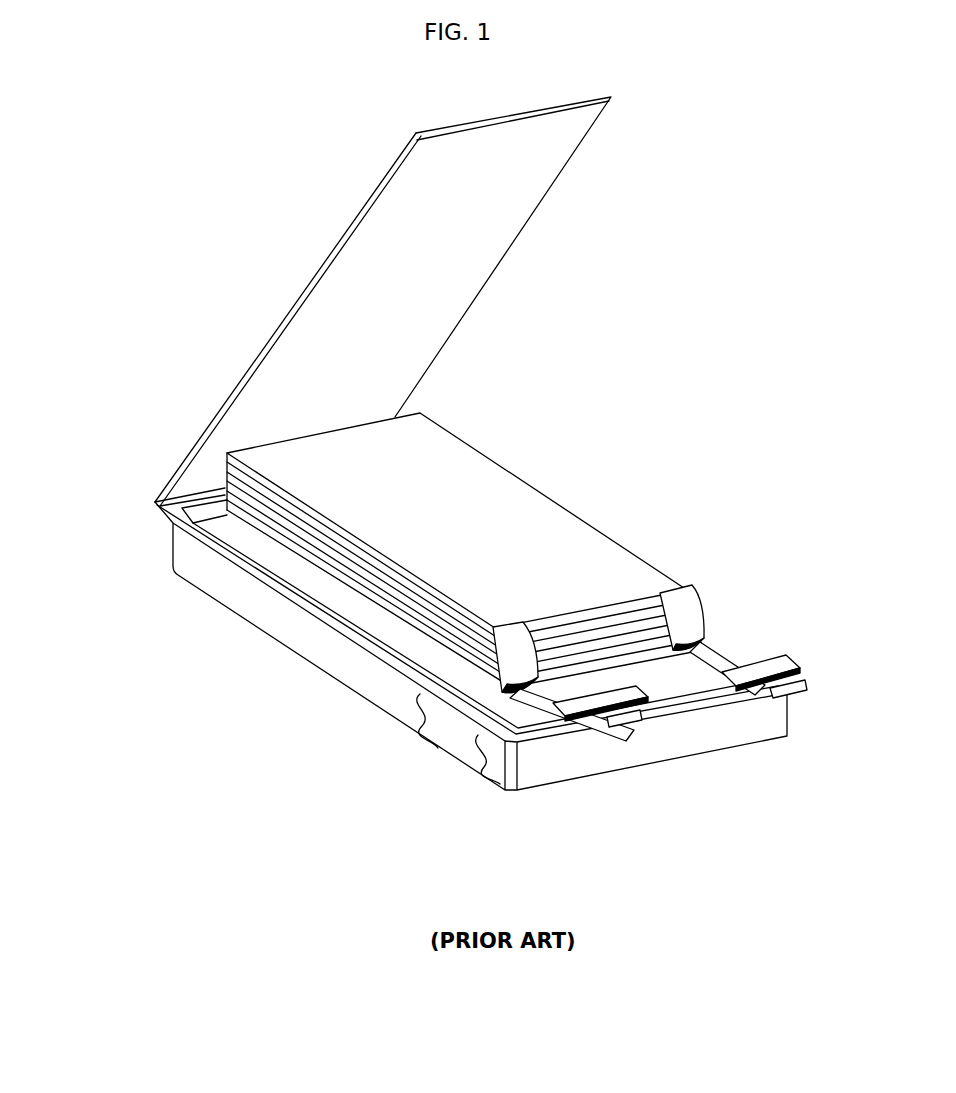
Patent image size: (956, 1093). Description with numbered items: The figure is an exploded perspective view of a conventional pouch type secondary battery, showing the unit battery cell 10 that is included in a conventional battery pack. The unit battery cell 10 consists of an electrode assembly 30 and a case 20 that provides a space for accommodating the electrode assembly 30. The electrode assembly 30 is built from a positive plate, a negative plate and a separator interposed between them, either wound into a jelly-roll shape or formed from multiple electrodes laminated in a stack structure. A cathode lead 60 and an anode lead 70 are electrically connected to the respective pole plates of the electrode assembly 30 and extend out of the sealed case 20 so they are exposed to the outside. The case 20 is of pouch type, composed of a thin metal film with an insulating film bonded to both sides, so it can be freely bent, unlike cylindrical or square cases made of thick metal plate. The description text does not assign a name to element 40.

The unit battery cell 10 is at (164, 210).
The case 20 is at (152, 500).
The electrode assembly 30 is at (552, 445).
The fixing member 40 is at (420, 737).
The cathode lead 60 is at (493, 770).
The anode lead 70 is at (758, 644).